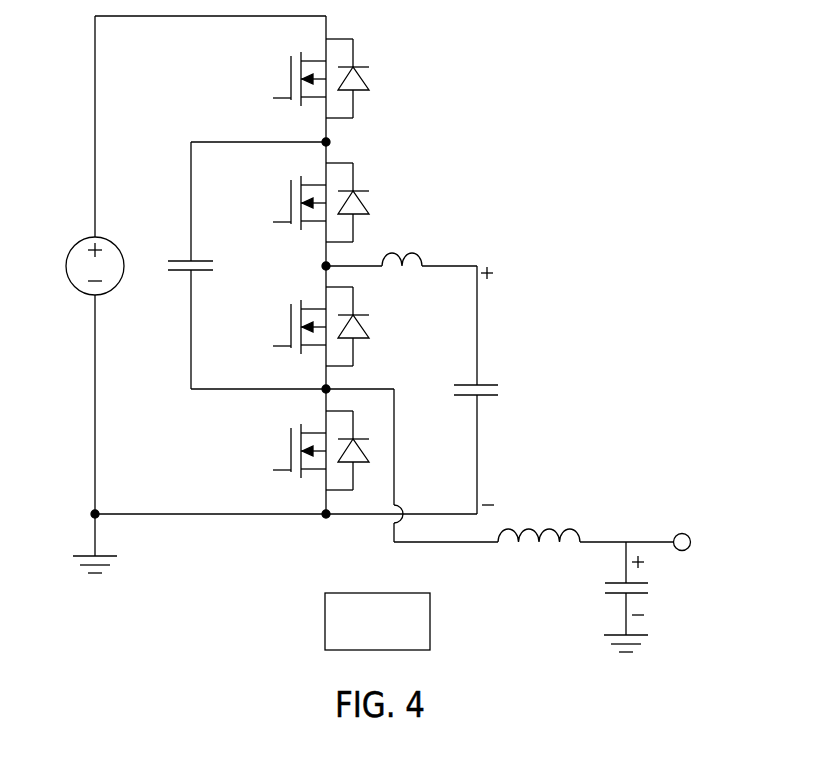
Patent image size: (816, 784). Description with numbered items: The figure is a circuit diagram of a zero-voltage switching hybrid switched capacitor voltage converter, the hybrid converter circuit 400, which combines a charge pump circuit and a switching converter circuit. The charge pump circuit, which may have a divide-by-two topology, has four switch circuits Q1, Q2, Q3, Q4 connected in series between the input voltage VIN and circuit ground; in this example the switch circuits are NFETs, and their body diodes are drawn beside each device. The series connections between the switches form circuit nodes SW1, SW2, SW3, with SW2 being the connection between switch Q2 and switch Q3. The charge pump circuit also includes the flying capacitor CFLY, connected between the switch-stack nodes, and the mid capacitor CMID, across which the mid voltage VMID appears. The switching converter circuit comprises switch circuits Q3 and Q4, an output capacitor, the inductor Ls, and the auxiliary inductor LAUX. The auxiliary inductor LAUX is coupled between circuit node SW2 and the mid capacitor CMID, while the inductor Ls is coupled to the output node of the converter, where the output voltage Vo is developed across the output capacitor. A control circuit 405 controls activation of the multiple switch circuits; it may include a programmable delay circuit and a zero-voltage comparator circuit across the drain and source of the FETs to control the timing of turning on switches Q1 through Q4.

The hybrid converter circuit 400 is at (545, 42).
The control circuit 405 is at (378, 593).
The input voltage VIN is at (93, 245).
The first switch circuit Q1 is at (317, 78).
The second switch circuit Q2 is at (316, 202).
The third switch circuit Q3 is at (315, 326).
The fourth switch circuit Q4 is at (315, 450).
The circuit node SW1 is at (345, 147).
The circuit node SW2 is at (304, 266).
The circuit node SW3 is at (367, 378).
The flying capacitor CFLY is at (178, 265).
The auxiliary inductor LAUX is at (401, 236).
The mid voltage VMID is at (502, 385).
The mid capacitor CMID is at (491, 449).
The inductor Ls is at (539, 518).
The output voltage Vo is at (643, 597).